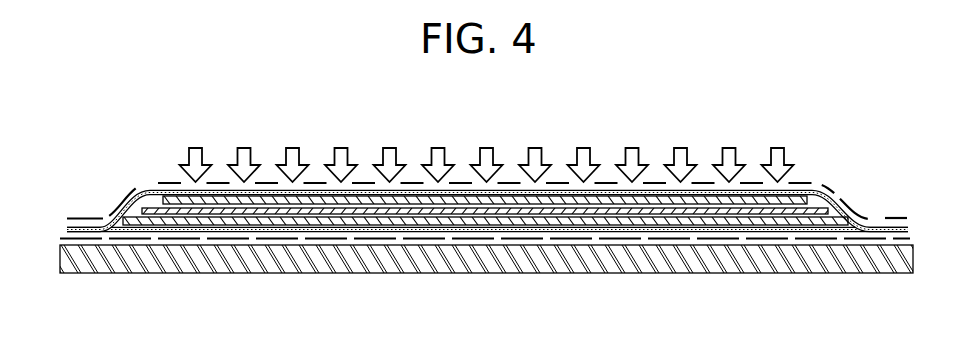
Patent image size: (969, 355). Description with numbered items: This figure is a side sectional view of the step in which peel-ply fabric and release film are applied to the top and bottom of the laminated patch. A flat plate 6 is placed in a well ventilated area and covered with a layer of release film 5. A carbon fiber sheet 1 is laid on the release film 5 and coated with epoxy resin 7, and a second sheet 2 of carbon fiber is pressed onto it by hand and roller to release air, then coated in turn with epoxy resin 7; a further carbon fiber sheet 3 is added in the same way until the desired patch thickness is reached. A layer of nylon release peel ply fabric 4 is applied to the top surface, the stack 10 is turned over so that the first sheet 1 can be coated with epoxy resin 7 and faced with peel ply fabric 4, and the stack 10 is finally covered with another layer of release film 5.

The carbon fiber sheet 1 is at (372, 220).
The second sheet of carbon fiber 2 is at (420, 210).
The third layer 3 is at (477, 200).
The nylon release peel ply fabric 4 is at (856, 225).
The release film 5 is at (487, 149).
The flat plate 6 is at (722, 262).
The epoxy resin 7 is at (775, 238).
The stack 10 is at (123, 189).